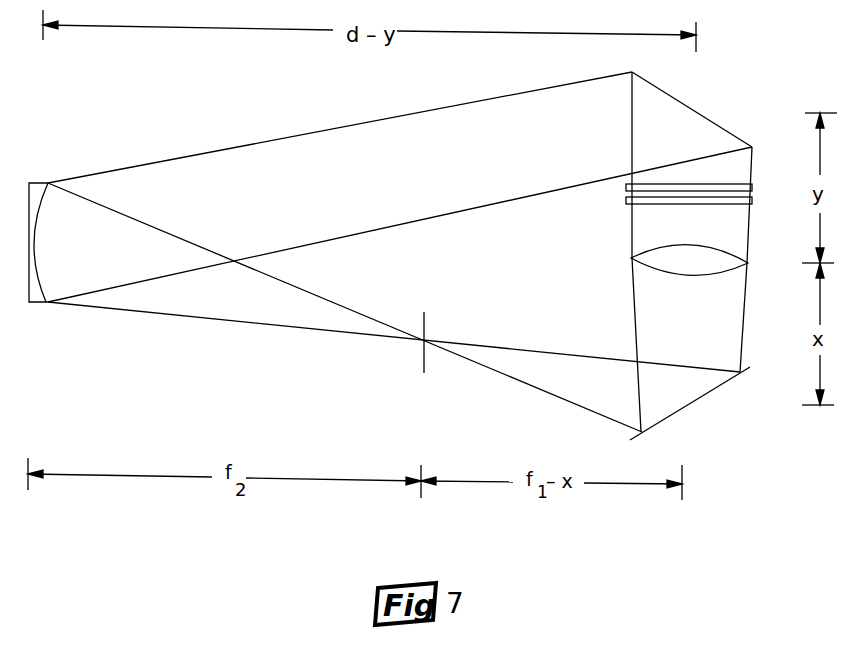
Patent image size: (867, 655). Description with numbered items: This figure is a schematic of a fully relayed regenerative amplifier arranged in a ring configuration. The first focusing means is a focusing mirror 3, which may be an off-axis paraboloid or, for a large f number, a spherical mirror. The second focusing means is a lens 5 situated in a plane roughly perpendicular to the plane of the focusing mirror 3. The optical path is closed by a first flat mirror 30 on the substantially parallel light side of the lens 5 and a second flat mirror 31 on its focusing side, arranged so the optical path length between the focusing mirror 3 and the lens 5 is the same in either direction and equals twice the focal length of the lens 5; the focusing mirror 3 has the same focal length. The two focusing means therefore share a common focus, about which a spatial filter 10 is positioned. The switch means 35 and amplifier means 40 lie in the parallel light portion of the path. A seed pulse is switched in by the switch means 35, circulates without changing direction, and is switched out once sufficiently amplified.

The focusing mirror 3 is at (30, 210).
The lens 5 is at (748, 263).
The spatial filter 10 is at (426, 328).
The first flat mirror 30 is at (677, 100).
The second flat mirror 31 is at (697, 402).
The switch means 35 is at (754, 188).
The amplifier means 40 is at (754, 201).